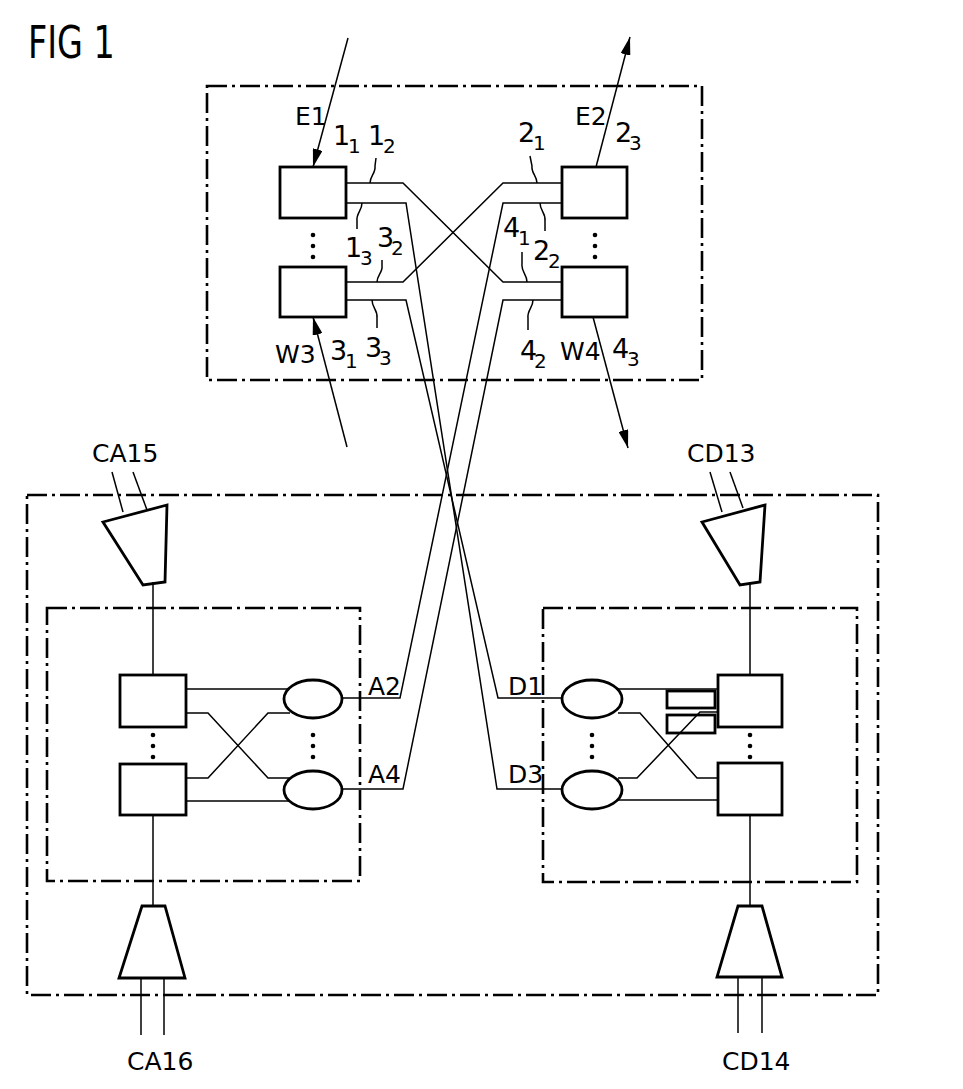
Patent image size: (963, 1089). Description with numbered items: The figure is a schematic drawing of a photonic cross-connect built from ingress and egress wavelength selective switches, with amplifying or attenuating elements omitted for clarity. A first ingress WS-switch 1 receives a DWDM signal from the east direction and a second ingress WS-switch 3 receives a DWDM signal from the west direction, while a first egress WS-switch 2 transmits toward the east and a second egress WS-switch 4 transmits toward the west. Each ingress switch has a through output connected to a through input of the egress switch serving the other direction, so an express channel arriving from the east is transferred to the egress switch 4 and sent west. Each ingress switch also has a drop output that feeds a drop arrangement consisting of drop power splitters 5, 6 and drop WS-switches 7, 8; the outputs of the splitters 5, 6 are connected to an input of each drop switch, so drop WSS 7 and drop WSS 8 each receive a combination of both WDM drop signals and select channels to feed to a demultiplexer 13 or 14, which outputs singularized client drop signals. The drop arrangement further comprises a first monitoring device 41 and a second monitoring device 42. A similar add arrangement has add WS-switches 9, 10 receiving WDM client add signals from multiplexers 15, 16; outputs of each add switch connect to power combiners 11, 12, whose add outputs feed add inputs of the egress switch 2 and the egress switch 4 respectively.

The first ingress wavelength selective switch 1 is at (280, 192).
The first egress wavelength selective switch 2 is at (627, 190).
The second ingress wavelength selective switch 3 is at (280, 293).
The second egress wavelength selective switch 4 is at (627, 290).
The drop power splitter 5 is at (590, 680).
The drop power splitter 6 is at (590, 809).
The drop wavelength selective switch 7 is at (782, 701).
The drop wavelength selective switch 8 is at (782, 789).
The add wavelength selective switch 9 is at (120, 701).
The add wavelength selective switch 10 is at (120, 787).
The power combiner 11 is at (313, 680).
The power combiner 12 is at (313, 809).
The demultiplexer 13 is at (718, 555).
The demultiplexer 14 is at (727, 940).
The multiplexer 15 is at (118, 555).
The multiplexer 16 is at (175, 945).
The first monitoring device 41 is at (690, 700).
The second monitoring device 42 is at (692, 728).